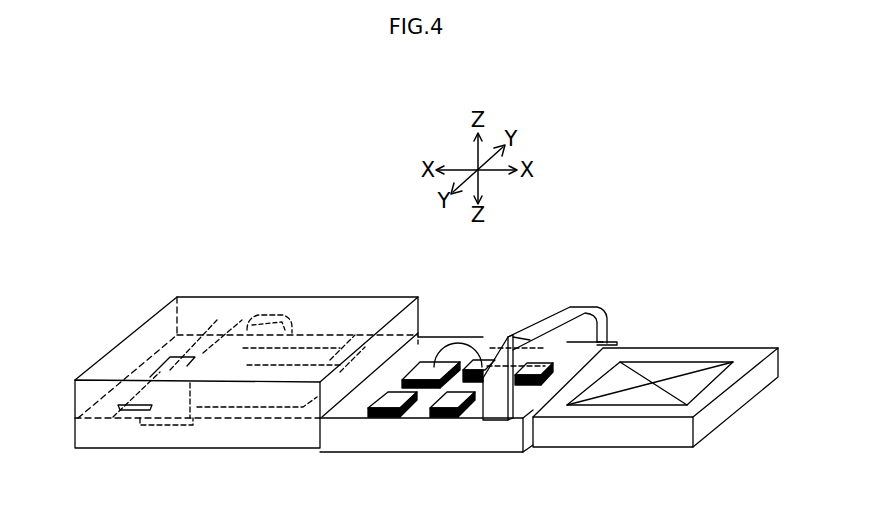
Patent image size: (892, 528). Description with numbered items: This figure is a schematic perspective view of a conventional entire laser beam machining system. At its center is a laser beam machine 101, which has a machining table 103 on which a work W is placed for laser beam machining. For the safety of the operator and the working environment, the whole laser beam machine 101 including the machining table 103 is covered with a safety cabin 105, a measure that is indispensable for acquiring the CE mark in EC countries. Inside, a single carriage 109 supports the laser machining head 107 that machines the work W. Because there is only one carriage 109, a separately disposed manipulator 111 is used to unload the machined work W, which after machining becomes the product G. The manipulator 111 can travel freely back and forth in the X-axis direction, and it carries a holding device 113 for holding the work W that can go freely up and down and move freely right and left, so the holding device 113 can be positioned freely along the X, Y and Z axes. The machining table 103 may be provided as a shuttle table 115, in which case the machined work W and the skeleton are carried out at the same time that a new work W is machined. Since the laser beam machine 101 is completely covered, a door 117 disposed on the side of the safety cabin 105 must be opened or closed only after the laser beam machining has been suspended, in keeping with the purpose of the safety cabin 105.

The laser beam machine 101 is at (279, 286).
The machining table 103 is at (246, 420).
The safety cabin 105 is at (125, 338).
The laser machining head 107 is at (277, 318).
The carriage 109 is at (244, 318).
The manipulator 111 is at (577, 310).
The holding device 113 is at (510, 347).
The shuttle table 115 is at (669, 366).
The door 117 is at (413, 323).
The product G is at (466, 343).
The work W is at (343, 338).